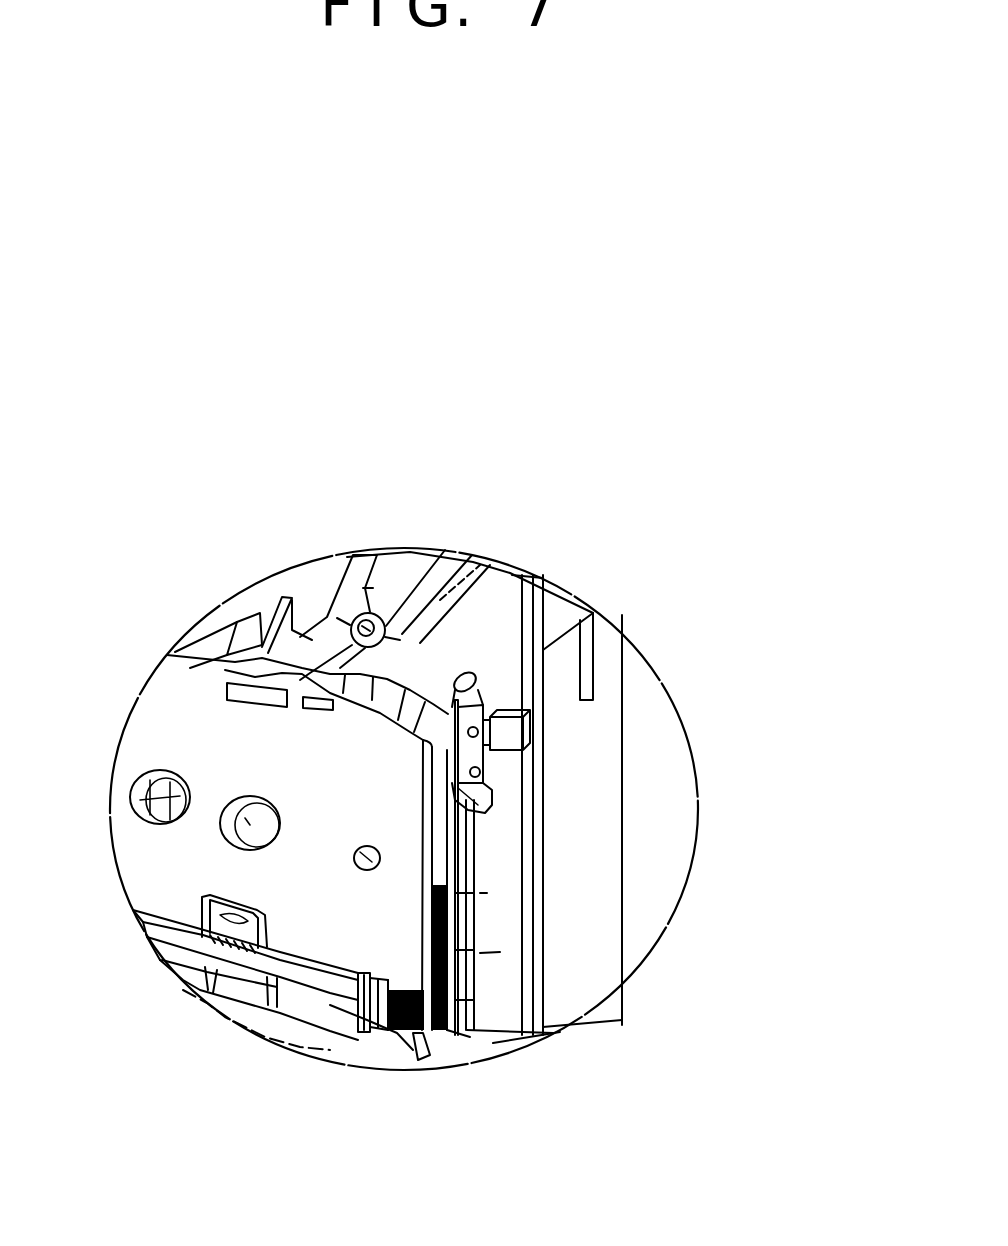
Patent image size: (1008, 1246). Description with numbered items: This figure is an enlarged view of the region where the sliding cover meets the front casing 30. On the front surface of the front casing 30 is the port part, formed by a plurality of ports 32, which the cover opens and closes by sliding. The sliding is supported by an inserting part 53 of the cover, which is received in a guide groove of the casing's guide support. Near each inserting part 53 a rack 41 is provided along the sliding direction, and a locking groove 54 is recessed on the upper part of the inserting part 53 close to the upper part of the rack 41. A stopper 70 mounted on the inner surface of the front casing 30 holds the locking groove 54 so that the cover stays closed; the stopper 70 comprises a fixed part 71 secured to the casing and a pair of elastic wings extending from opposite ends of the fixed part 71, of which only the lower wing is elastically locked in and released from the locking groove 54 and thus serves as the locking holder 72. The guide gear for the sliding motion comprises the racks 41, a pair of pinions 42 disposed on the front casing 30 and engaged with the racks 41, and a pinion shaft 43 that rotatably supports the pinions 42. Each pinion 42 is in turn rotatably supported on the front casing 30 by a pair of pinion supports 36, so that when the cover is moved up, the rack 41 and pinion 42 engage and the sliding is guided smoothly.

The front casing 30 is at (627, 815).
The ports 32 is at (257, 823).
The pinion supports 36 is at (393, 1000).
The racks 41 is at (480, 953).
The pinions 42 is at (427, 1040).
The pinion shaft 43 is at (290, 1033).
The inserting part 53 is at (487, 865).
The locking grooves 54 is at (480, 895).
The stoppers 70 is at (681, 741).
The fixed part 71 is at (560, 725).
The locking holder 72 is at (517, 773).